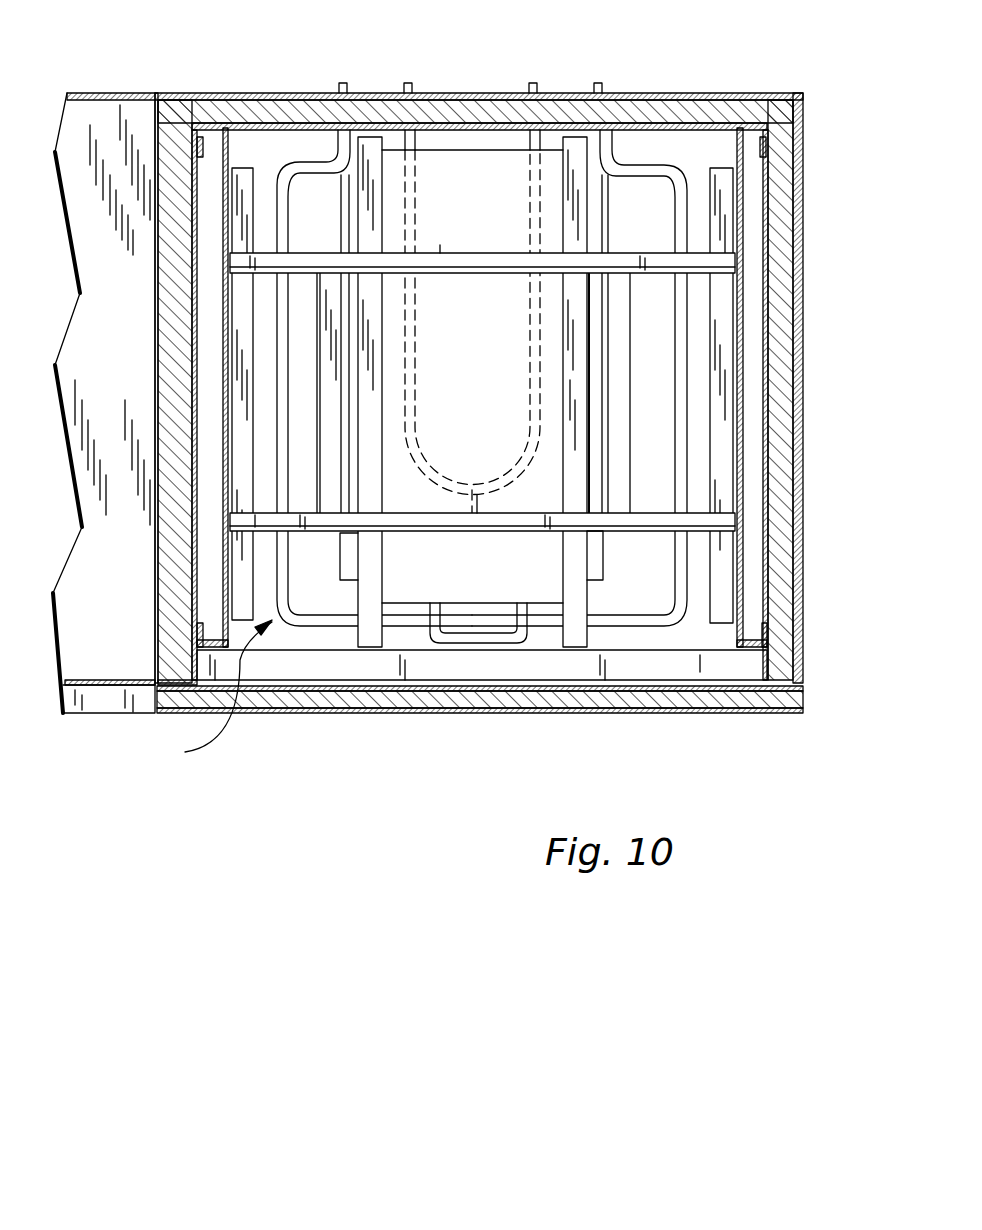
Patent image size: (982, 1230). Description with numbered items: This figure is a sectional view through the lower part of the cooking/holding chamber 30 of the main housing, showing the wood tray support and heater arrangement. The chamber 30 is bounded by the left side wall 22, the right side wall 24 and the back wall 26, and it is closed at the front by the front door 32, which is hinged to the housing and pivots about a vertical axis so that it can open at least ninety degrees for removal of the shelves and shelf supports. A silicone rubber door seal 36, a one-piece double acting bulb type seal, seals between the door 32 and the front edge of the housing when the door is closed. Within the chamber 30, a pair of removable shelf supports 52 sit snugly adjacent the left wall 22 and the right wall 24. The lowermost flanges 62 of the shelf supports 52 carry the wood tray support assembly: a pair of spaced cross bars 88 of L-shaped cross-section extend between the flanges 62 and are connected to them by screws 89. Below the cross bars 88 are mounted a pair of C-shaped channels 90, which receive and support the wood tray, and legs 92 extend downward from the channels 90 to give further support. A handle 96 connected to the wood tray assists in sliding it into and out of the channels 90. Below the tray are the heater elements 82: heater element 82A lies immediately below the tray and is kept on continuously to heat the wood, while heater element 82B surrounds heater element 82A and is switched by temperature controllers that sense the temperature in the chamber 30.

The left side wall 22 is at (157, 610).
The right side wall 24 is at (800, 430).
The back wall 26 is at (437, 97).
The cooking/holding chamber 30 is at (211, 696).
The front door 32 is at (357, 705).
The door seal 36 is at (640, 690).
The shelf support 52 is at (228, 392).
The lowermost flange 62 is at (233, 340).
The heating element 82 is at (467, 160).
The heater element 82A is at (397, 133).
The heater element 82B is at (682, 558).
The cross bar 88 is at (438, 250).
The screw 89 is at (243, 265).
The C-shaped channel 90 is at (590, 598).
The leg 92 is at (343, 571).
The handle 96 is at (455, 645).